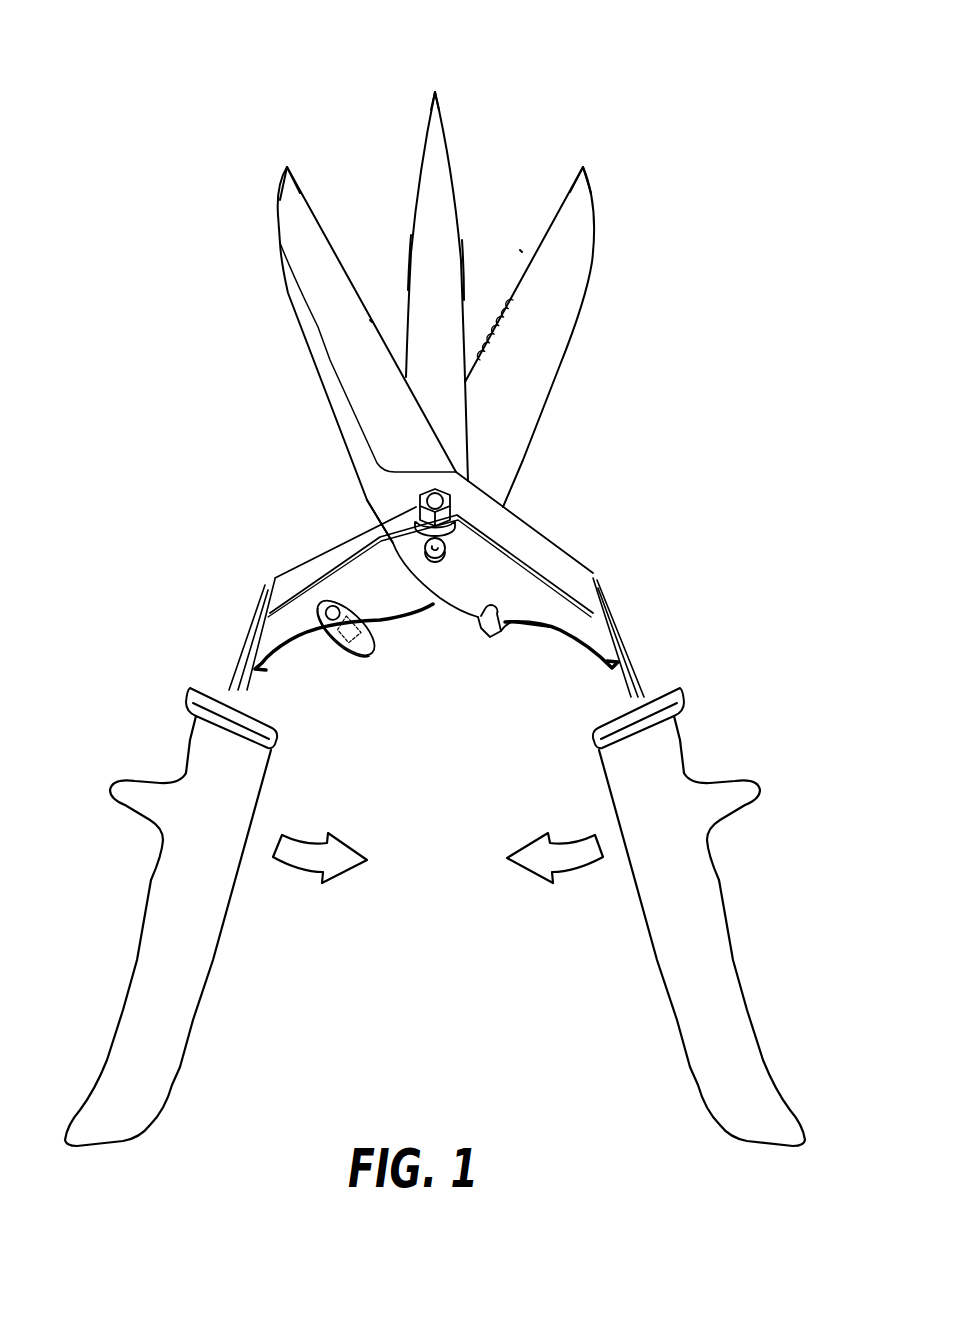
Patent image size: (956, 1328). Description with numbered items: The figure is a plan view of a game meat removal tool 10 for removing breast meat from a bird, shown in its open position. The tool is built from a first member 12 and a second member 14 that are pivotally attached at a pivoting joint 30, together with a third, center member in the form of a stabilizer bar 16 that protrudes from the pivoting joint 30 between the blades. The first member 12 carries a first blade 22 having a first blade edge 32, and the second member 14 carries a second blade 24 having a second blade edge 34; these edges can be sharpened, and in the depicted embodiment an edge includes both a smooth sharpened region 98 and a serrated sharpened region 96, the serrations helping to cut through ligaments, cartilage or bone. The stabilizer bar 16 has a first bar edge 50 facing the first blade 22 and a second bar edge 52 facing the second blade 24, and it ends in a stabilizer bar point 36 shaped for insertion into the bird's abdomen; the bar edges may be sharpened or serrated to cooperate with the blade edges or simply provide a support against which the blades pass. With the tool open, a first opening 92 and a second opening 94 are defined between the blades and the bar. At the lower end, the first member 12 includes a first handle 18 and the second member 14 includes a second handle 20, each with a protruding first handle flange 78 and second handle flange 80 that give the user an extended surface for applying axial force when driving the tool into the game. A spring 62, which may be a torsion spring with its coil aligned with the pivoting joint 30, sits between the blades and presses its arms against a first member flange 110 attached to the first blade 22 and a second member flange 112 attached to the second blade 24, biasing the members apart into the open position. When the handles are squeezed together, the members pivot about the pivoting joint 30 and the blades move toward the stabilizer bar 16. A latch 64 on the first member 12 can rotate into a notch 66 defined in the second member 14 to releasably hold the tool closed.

The meat removal tool 10 is at (772, 150).
The first member 12 is at (195, 613).
The second member 14 is at (702, 658).
The stabilizer bar 16 is at (450, 193).
The first handle 18 is at (225, 923).
The second handle 20 is at (645, 907).
The first blade 22 is at (582, 242).
The second blade 24 is at (328, 322).
The pivoting joint 30 is at (460, 500).
The first blade edge 32 is at (575, 180).
The second blade edge 34 is at (307, 202).
The stabilizer bar point 36 is at (447, 77).
The first bar edge 50 is at (463, 270).
The second bar edge 52 is at (407, 253).
The spring 62 is at (533, 563).
The latch 64 is at (348, 660).
The notch 66 is at (513, 640).
The first handle flange 78 is at (147, 807).
The second handle flange 80 is at (735, 800).
The first opening 92 is at (538, 110).
The second opening 94 is at (395, 132).
The serrated sharpened region 96 is at (495, 340).
The smooth sharpened region 98 is at (528, 282).
The first member flange 110 is at (240, 636).
The second member flange 112 is at (623, 617).